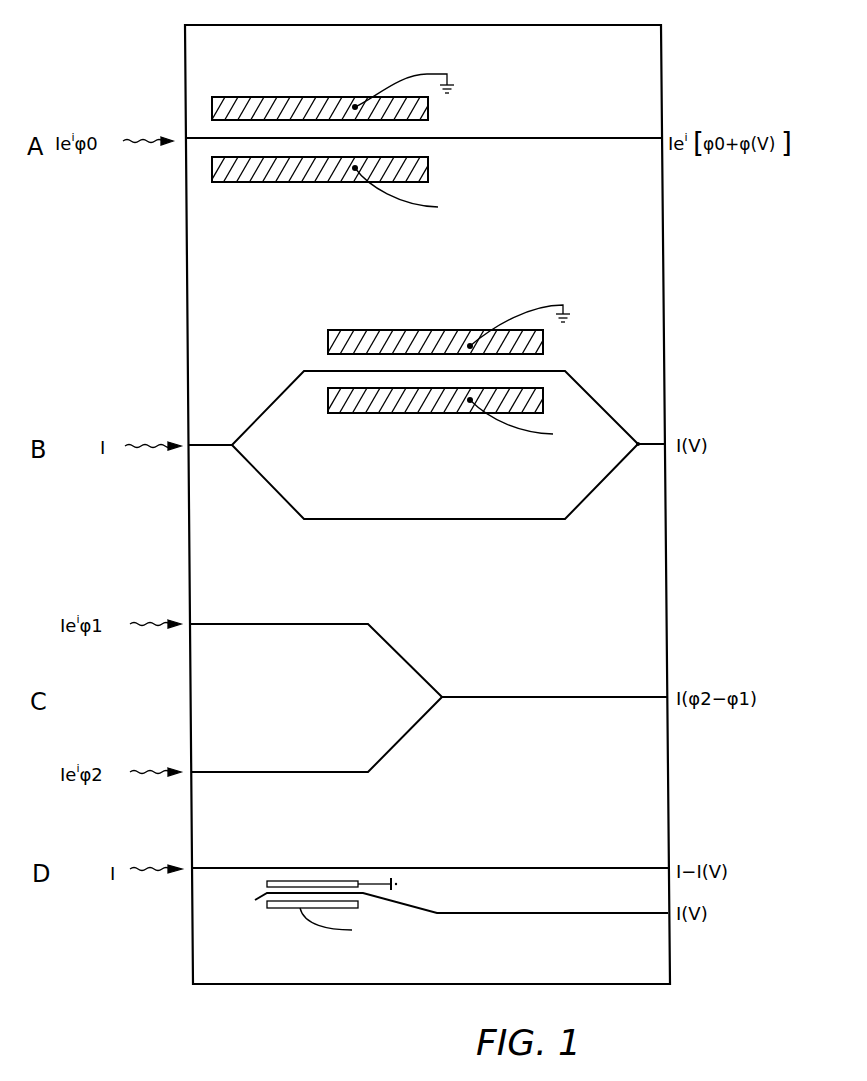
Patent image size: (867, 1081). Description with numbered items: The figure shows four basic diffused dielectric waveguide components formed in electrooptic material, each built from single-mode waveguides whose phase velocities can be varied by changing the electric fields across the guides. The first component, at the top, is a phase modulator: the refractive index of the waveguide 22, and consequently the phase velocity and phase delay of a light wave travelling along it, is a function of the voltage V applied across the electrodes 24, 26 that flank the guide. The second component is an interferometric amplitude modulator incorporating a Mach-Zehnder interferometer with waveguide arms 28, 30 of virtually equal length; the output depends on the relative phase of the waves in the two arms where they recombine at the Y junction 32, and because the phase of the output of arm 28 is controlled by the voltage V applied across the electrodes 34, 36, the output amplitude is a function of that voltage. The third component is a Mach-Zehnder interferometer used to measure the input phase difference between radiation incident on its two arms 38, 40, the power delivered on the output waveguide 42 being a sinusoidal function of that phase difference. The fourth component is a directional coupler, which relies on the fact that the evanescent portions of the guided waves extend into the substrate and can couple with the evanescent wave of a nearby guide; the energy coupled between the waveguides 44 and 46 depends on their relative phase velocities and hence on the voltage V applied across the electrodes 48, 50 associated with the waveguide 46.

The waveguide 22 is at (550, 136).
The electrode 24 is at (331, 182).
The electrode 26 is at (332, 97).
The waveguide arm 28 is at (275, 397).
The waveguide arm 30 is at (272, 490).
The Y junction 32 is at (650, 442).
The electrode 34 is at (405, 414).
The electrode 36 is at (433, 330).
The arm 38 is at (312, 625).
The arm 40 is at (333, 771).
The output waveguide 42 is at (568, 696).
The waveguide 44 is at (592, 867).
The waveguide 46 is at (601, 914).
The electrode 48 is at (283, 908).
The electrode 50 is at (372, 867).